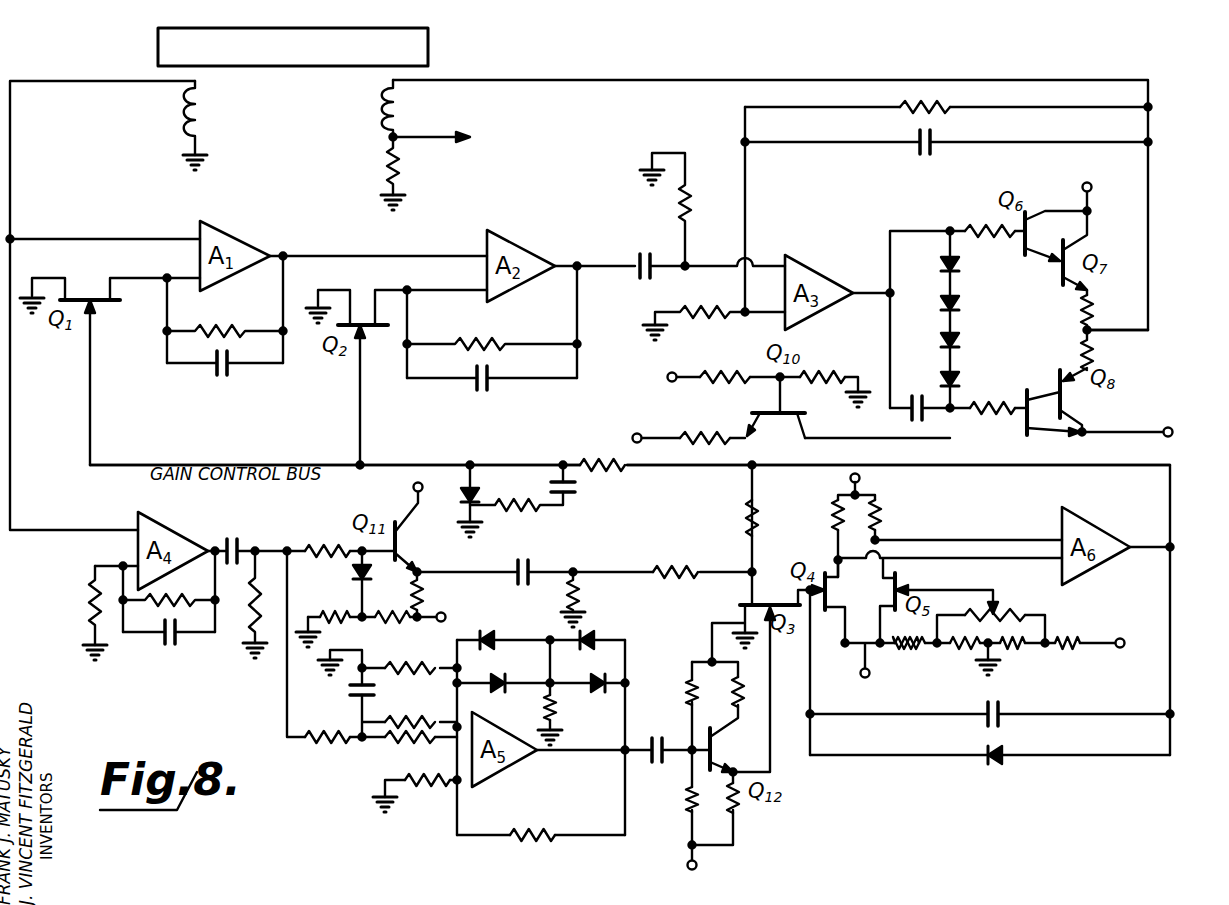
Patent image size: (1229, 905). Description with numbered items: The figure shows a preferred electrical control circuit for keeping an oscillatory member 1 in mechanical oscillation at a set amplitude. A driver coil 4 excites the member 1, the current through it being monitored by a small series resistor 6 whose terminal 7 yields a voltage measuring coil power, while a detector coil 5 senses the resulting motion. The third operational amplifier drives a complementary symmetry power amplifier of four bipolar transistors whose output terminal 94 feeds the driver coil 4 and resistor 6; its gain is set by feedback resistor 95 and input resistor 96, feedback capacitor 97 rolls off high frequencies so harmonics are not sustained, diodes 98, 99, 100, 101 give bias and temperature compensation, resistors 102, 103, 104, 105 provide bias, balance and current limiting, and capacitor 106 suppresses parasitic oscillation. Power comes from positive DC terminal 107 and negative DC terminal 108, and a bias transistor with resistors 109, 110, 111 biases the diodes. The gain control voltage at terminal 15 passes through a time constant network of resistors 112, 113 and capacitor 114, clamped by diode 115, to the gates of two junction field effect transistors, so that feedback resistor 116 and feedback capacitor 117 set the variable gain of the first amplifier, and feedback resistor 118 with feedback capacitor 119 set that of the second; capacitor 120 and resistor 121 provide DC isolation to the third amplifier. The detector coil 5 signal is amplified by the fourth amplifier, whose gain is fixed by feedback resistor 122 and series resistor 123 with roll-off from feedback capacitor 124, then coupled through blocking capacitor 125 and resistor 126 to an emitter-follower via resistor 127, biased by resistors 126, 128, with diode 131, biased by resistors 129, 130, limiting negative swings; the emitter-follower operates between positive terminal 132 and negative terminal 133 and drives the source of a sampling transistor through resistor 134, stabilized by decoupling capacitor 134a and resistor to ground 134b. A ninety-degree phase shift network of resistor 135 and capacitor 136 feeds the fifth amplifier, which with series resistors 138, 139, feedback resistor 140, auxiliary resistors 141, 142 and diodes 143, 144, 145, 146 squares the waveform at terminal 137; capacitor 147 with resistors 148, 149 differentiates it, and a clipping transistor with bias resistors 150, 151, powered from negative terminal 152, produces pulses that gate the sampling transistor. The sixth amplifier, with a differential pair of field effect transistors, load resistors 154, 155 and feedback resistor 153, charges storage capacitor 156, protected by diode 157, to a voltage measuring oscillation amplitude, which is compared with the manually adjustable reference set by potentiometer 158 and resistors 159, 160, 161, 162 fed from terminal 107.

The oscillatory member 1 is at (428, 47).
The driver coil 4 is at (400, 120).
The detector coil 5 is at (199, 118).
The series resistor 6 is at (404, 167).
The terminal 7 is at (410, 145).
The gain control voltage terminal 15 is at (700, 468).
The power amplifier output terminal 94 is at (1092, 335).
The feedback resistor 95 is at (940, 107).
The input resistor 96 is at (713, 290).
The feedback capacitor 97 is at (930, 140).
The diode 98 is at (958, 265).
The diode 99 is at (958, 305).
The diode 100 is at (958, 340).
The diode 101 is at (958, 380).
The resistor 102 is at (975, 225).
The resistor 103 is at (1080, 310).
The resistor 104 is at (1080, 355).
The resistor 105 is at (991, 421).
The capacitor 106 is at (905, 412).
The positive DC terminal 107 is at (1090, 182).
The negative DC terminal 108 is at (637, 433).
The resistor 109 is at (715, 435).
The resistor 110 is at (740, 375).
The resistor 111 is at (836, 377).
The resistor 112 is at (605, 462).
The resistor 113 is at (520, 512).
The capacitor 114 is at (577, 491).
The diode 115 is at (480, 500).
The feedback resistor 116 is at (225, 325).
The feedback capacitor 117 is at (215, 368).
The feedback resistor 118 is at (462, 342).
The feedback capacitor 119 is at (493, 378).
The capacitor 120 is at (640, 258).
The resistor 121 is at (680, 208).
The feedback resistor 122 is at (175, 595).
The series resistor 123 is at (92, 600).
The feedback capacitor 124 is at (165, 640).
The blocking capacitor 125 is at (240, 532).
The resistor 126 is at (250, 638).
The resistor 127 is at (309, 535).
The resistor 128 is at (425, 596).
The resistor 129 is at (395, 612).
The resistor 130 is at (330, 615).
The diode 131 is at (355, 581).
The positive DC voltage terminal 132 is at (412, 490).
The negative DC voltage terminal 133 is at (448, 615).
The resistor 134 is at (683, 577).
The decoupling capacitor 134a is at (516, 570).
The resistor to ground 134b is at (582, 596).
The resistor 135 is at (317, 746).
The capacitor 136 is at (345, 690).
The terminal 137 is at (382, 746).
The series resistor 138 is at (415, 718).
The series resistor 139 is at (405, 792).
The feedback resistor 140 is at (540, 845).
The auxiliary resistor 141 is at (545, 710).
The auxiliary resistor 142 is at (432, 664).
The diode 143 is at (490, 636).
The diode 144 is at (586, 636).
The diode 145 is at (510, 668).
The diode 146 is at (592, 688).
The capacitor 147 is at (655, 740).
The resistor 148 is at (690, 682).
The resistor 149 is at (688, 800).
The bias resistor 150 is at (740, 710).
The bias resistor 151 is at (740, 800).
The negative DC voltage supply terminal 152 is at (687, 866).
The feedback resistor 153 is at (750, 518).
The load resistor 154 is at (833, 515).
The load resistor 155 is at (882, 515).
The storage capacitor 156 is at (985, 720).
The diode 157 is at (995, 762).
The potentiometer 158 is at (1003, 604).
The resistor 159 is at (915, 650).
The resistor 160 is at (958, 655).
The resistor 161 is at (1012, 654).
The resistor 162 is at (1060, 650).